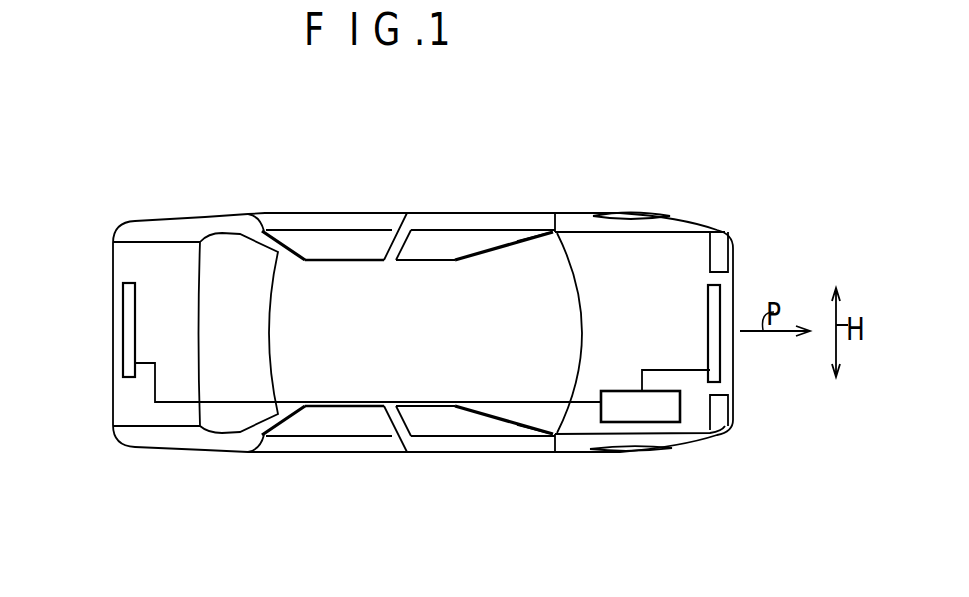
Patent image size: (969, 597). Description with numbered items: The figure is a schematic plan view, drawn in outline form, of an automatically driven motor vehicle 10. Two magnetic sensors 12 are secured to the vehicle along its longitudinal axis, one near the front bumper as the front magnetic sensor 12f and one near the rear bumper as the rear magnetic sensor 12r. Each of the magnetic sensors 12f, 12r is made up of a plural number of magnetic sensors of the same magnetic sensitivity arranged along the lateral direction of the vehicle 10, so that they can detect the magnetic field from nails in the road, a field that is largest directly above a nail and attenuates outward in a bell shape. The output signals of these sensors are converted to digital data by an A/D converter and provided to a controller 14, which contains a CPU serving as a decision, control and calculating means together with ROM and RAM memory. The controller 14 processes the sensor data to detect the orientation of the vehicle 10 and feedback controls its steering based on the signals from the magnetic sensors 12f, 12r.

The motor vehicle 10 is at (369, 213).
The magnetic sensors 12 is at (407, 232).
The front magnetic sensor 12f is at (716, 302).
The rear magnetic sensor 12r is at (130, 302).
The controller 14 is at (627, 391).